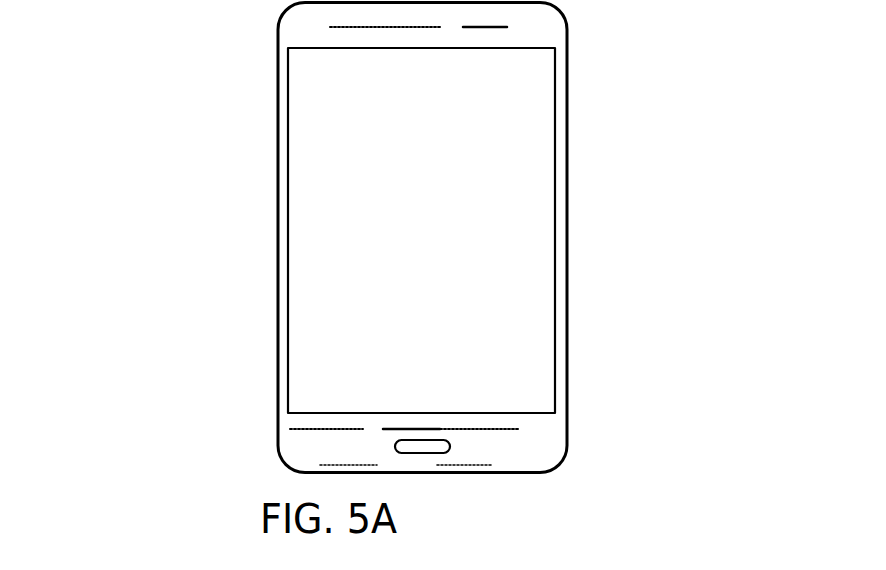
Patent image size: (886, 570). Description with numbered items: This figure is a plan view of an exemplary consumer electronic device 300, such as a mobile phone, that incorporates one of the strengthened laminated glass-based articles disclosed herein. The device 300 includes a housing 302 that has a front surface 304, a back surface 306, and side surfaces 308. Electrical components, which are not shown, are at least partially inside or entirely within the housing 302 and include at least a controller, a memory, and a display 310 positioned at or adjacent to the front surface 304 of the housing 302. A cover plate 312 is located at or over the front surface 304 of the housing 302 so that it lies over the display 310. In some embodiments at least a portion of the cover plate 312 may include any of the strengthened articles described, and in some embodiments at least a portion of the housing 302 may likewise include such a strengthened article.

The consumer electronic device 300 is at (595, 53).
The housing 302 is at (298, 23).
The front surface 304 is at (537, 447).
The back surface 306 is at (317, 180).
The side surfaces 308 is at (568, 273).
The display 310 is at (498, 185).
The cover plate 312 is at (327, 302).